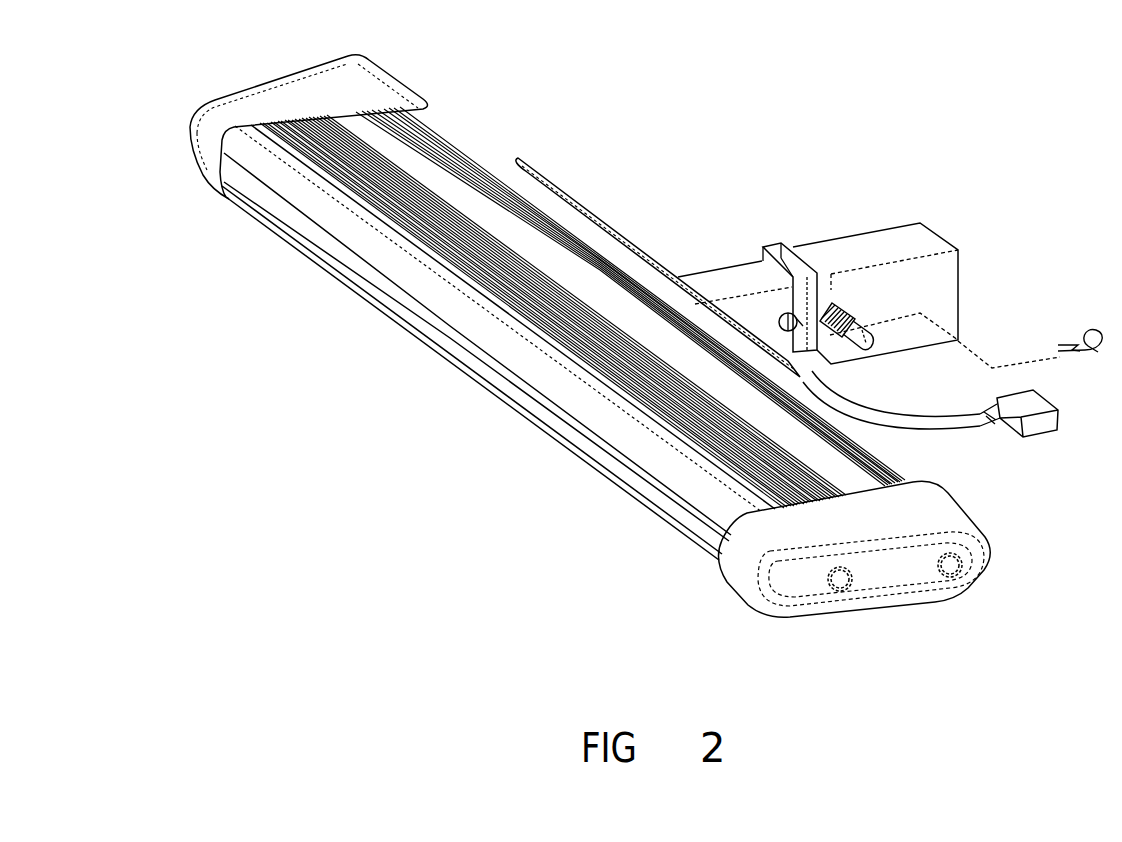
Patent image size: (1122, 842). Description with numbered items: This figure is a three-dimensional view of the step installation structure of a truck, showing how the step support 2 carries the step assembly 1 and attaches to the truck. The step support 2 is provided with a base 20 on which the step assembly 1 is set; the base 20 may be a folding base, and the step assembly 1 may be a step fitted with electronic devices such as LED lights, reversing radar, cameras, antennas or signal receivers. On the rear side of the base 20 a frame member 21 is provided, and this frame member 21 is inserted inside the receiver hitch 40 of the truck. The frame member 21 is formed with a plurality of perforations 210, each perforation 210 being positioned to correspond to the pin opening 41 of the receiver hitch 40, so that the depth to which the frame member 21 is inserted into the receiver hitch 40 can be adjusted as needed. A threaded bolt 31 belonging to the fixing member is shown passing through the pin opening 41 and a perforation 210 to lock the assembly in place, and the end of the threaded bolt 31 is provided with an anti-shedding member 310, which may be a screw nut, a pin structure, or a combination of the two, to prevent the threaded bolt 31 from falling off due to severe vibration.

The step assembly 1 is at (458, 358).
The step support 2 is at (666, 228).
The base 20 is at (567, 195).
The frame member 21 is at (737, 277).
The perforation 210 is at (790, 303).
The threaded bolt 31 is at (862, 341).
The anti-shedding member 310 is at (1078, 335).
The receiver hitch 40 is at (888, 235).
The pin opening 41 is at (835, 302).